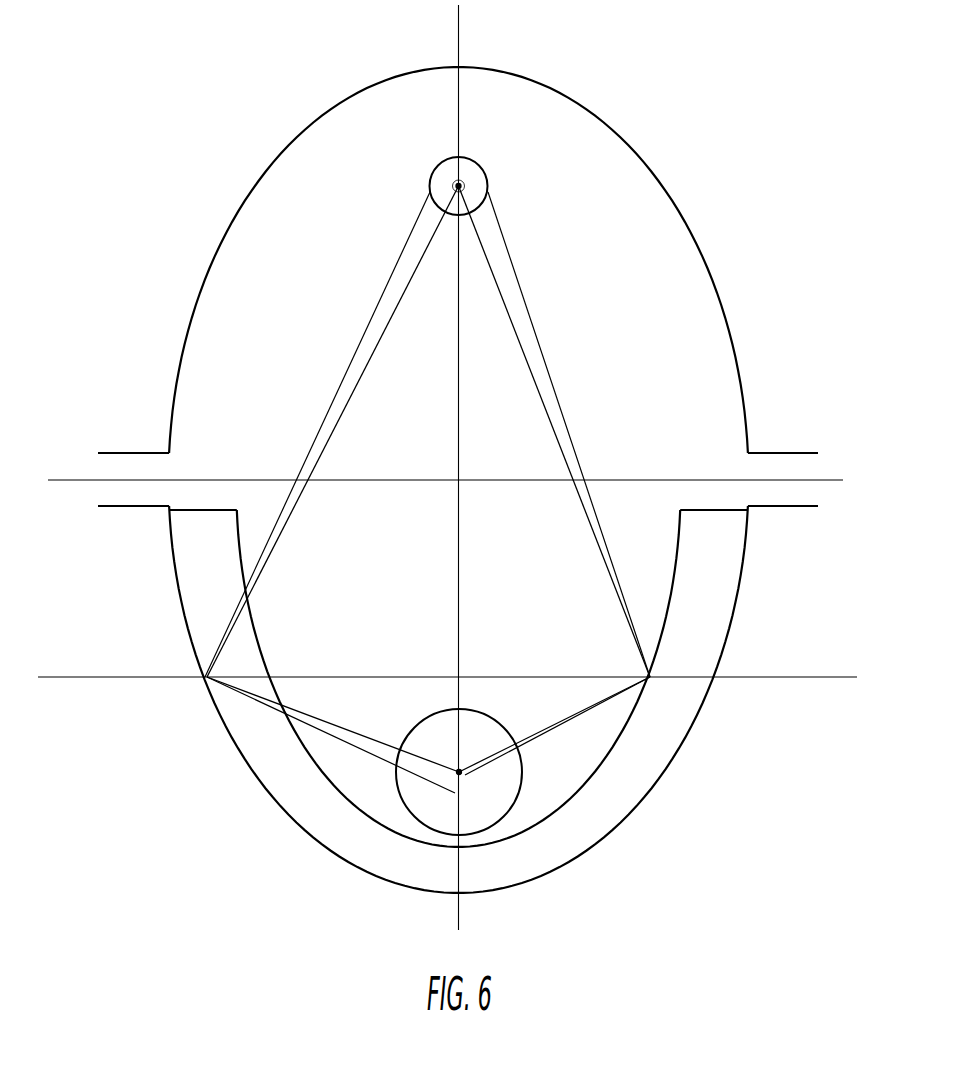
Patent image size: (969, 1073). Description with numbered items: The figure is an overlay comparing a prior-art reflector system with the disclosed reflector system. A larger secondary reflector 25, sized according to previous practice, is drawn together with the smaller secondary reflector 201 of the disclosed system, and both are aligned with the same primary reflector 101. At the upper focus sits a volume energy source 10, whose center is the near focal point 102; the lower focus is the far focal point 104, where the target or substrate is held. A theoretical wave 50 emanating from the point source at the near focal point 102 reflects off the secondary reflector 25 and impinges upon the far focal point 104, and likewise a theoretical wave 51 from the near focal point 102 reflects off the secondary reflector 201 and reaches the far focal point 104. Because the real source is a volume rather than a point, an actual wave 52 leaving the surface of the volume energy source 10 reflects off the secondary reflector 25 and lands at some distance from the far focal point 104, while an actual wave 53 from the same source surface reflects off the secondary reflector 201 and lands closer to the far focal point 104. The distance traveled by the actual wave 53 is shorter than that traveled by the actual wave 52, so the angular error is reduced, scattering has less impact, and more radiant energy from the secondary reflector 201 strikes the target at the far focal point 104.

The volume energy source 10 is at (438, 160).
The near focal point 102 is at (466, 186).
The primary reflector 101 is at (622, 137).
The secondary reflector 25 is at (180, 603).
The secondary reflector 201 is at (626, 740).
The far focal point 104 is at (413, 747).
The theoretical wave 50 is at (283, 705).
The theoretical wave 51 is at (548, 727).
The actual wave 52 is at (338, 745).
The actual wave 53 is at (535, 748).